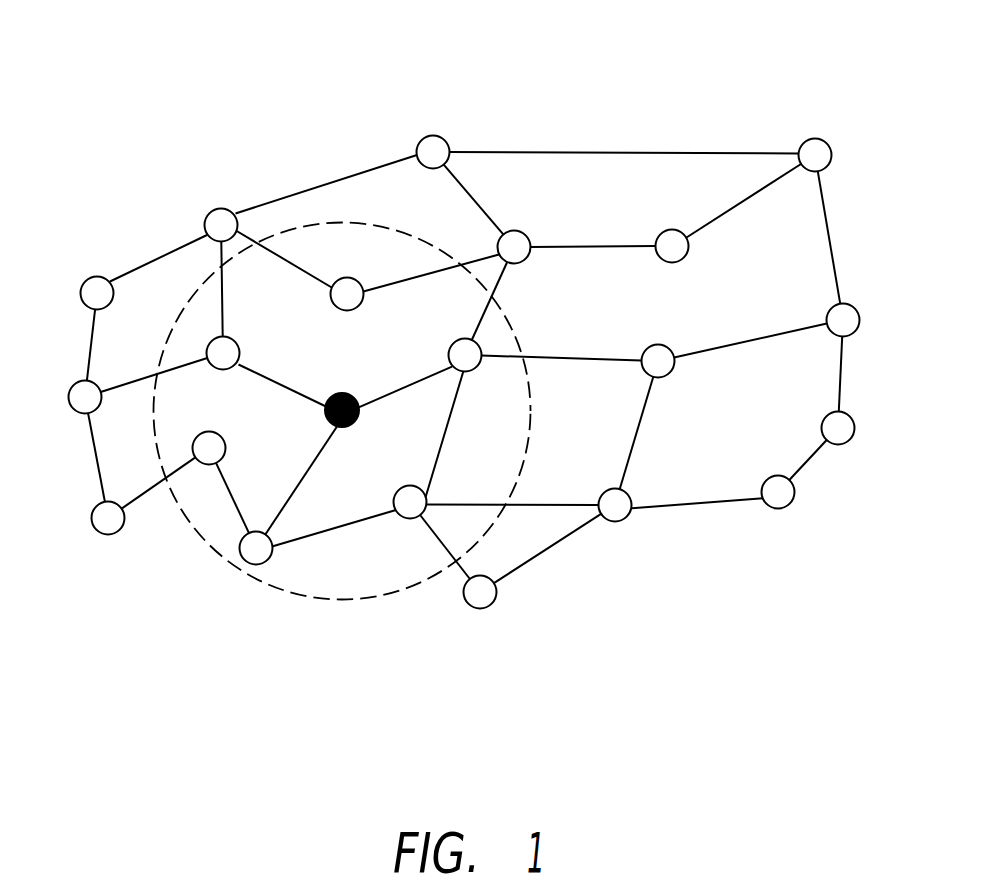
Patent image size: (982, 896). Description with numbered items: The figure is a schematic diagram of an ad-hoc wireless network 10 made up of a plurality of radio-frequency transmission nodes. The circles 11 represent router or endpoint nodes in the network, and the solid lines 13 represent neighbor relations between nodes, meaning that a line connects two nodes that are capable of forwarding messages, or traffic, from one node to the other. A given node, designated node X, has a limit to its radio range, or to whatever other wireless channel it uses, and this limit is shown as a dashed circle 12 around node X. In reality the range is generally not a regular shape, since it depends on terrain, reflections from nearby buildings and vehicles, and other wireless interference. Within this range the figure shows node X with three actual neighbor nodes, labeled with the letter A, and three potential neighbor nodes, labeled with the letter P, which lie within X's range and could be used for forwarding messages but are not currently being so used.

The ad-hoc wireless network 10 is at (543, 80).
The circles 11 is at (809, 141).
The dashed circle 12 is at (532, 420).
The solid lines 13 is at (686, 150).